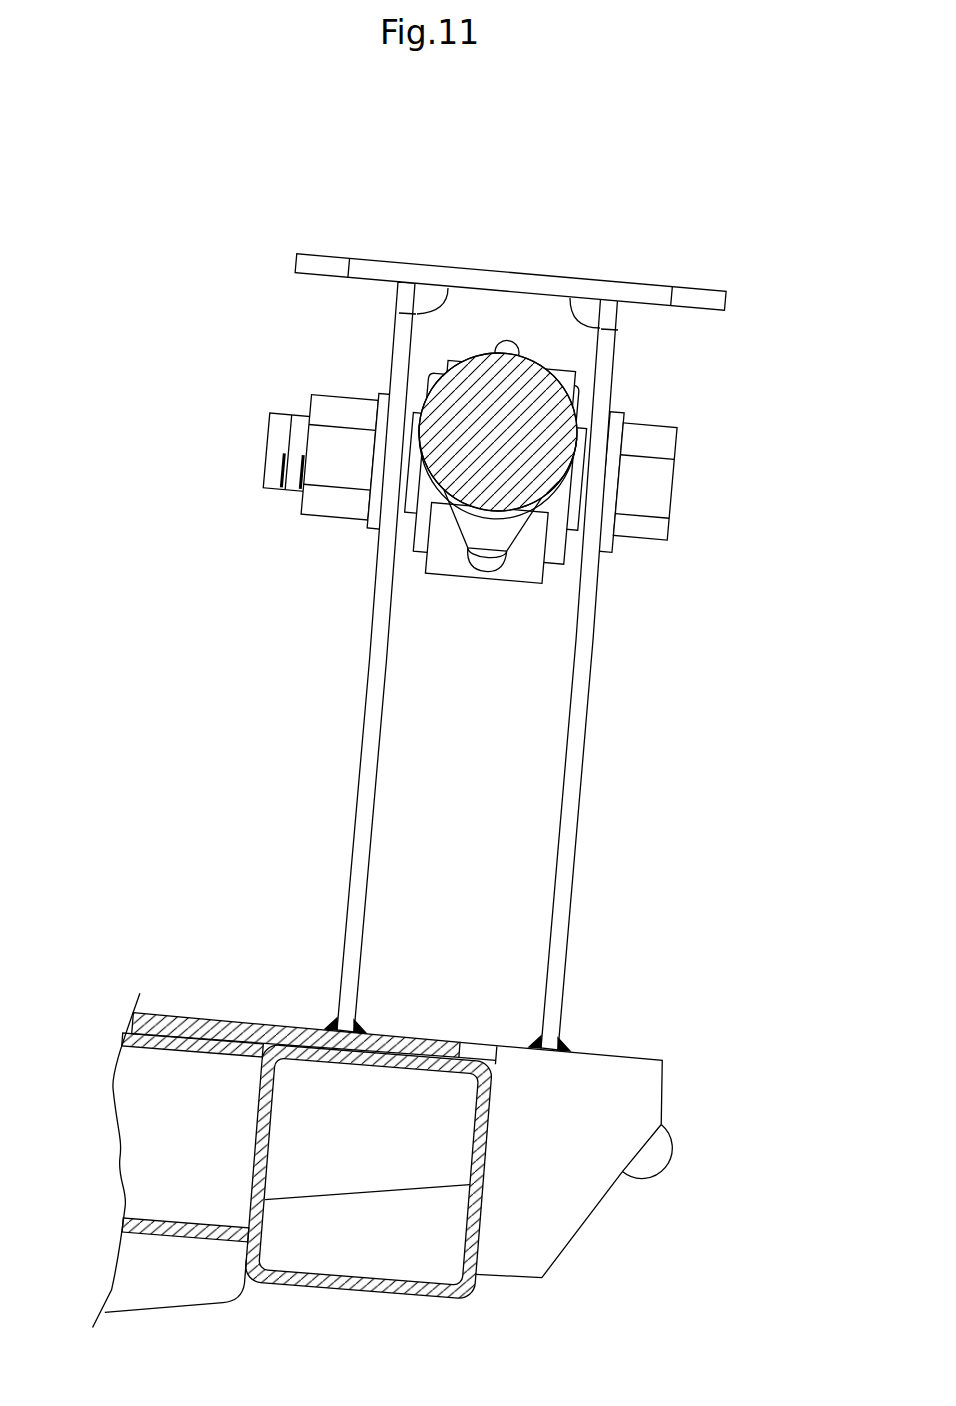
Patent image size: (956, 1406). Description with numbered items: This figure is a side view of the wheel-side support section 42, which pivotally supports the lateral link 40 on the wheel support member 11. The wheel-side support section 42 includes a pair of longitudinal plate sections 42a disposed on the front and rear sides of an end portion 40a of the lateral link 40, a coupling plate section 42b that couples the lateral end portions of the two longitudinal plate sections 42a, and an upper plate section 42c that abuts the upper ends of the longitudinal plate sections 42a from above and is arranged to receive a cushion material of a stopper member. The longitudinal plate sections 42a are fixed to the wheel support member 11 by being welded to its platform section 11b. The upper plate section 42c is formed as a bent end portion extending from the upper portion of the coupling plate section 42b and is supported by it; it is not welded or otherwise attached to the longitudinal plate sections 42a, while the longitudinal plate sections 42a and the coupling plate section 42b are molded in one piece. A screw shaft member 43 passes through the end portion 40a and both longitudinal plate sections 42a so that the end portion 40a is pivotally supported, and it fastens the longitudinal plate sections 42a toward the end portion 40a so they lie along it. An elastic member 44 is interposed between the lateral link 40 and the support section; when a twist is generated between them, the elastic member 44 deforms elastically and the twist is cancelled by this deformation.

The wheel support member 11 is at (387, 1138).
The platform section 11b is at (210, 1010).
The lateral link 40 is at (447, 385).
The end portion 40a is at (522, 575).
The wheel-side support section 42 is at (395, 600).
The longitudinal plate sections 42a is at (370, 700).
The coupling plate section 42b is at (478, 828).
The upper plate section 42c is at (523, 268).
The screw shaft member 43 is at (663, 474).
The elastic member 44 is at (412, 553).